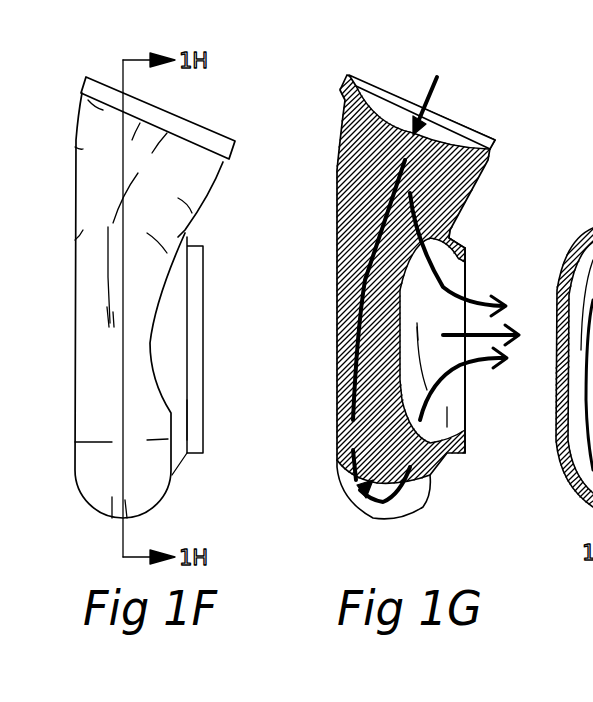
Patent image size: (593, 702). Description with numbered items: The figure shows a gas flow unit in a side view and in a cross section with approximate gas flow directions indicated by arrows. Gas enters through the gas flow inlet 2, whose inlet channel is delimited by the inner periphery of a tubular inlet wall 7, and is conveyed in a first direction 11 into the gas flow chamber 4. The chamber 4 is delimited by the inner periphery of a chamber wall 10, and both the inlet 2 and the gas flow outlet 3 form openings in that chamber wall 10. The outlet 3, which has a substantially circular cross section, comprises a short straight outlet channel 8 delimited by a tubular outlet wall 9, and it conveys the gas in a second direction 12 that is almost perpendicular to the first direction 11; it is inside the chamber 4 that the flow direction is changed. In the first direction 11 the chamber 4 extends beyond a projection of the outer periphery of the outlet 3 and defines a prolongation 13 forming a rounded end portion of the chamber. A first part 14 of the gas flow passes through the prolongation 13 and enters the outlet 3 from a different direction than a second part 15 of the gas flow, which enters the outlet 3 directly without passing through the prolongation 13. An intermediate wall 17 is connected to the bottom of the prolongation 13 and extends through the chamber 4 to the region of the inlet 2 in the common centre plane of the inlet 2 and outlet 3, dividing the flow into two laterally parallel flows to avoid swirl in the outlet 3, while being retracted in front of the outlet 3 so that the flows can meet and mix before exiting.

In FIG. 1F, the gas flow inlet 2 is at (106, 66).
In FIG. 1G, the gas flow inlet 2 is at (450, 120).
In FIG. 1F, the gas flow outlet 3 is at (210, 278).
In FIG. 1G, the gas flow outlet 3 is at (466, 418).
In FIG. 1G, the gas flow chamber 4 is at (392, 294).
In FIG. 1F, the tubular inlet wall 7 is at (212, 137).
In FIG. 1G, the tubular inlet wall 7 is at (501, 150).
In FIG. 1G, the outlet channel 8 is at (458, 385).
In FIG. 1F, the tubular outlet wall 9 is at (195, 417).
In FIG. 1G, the tubular outlet wall 9 is at (465, 248).
In FIG. 1F, the chamber wall 10 is at (85, 398).
In FIG. 1G, the chamber wall 10 is at (440, 500).
In FIG. 1G, the first direction 11 is at (437, 82).
In FIG. 1G, the second direction 12 is at (520, 333).
In FIG. 1G, the prolongation 13 is at (358, 492).
In FIG. 1G, the first part of the gas flow 14 is at (507, 370).
In FIG. 1G, the second part of the gas flow 15 is at (510, 297).
In FIG. 1G, the intermediate wall 17 is at (357, 173).